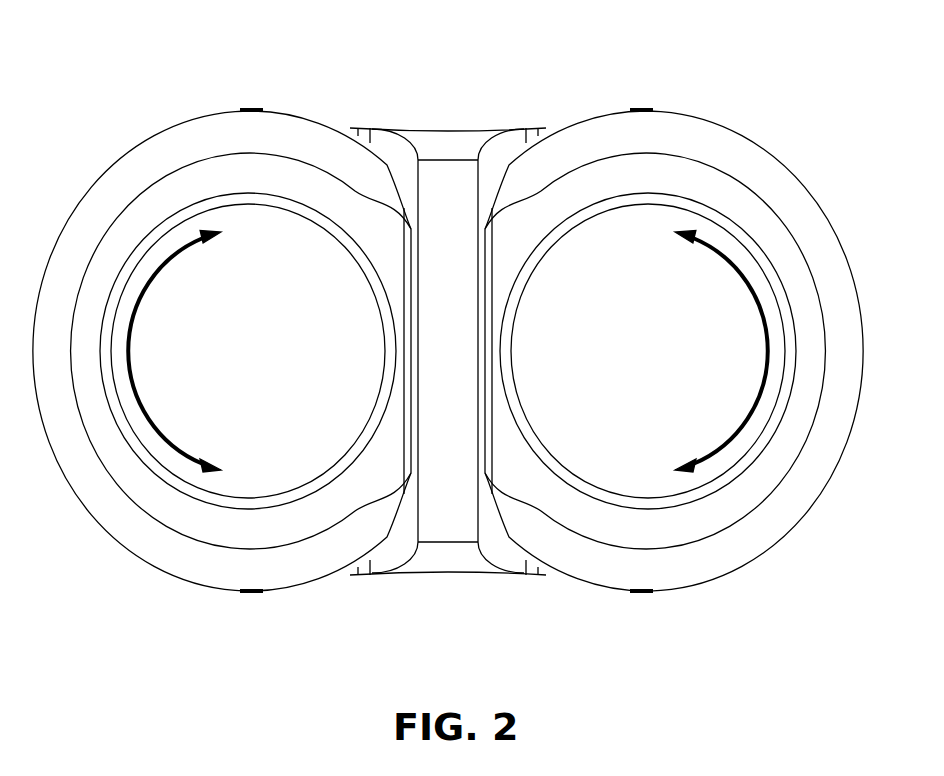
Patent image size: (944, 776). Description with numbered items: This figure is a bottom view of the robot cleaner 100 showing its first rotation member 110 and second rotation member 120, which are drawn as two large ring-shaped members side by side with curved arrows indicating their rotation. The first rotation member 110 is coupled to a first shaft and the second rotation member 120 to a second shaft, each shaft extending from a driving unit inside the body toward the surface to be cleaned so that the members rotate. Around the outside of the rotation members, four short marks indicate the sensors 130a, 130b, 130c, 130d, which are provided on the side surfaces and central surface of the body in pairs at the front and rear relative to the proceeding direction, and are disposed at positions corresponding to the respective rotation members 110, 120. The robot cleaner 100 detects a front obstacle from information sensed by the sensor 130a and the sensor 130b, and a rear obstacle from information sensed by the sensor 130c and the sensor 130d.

The robot cleaner 100 is at (448, 353).
The first rotation member 110 is at (207, 504).
The second rotation member 120 is at (689, 504).
The sensor 130a is at (251, 108).
The sensor 130b is at (641, 108).
The sensor 130c is at (251, 594).
The sensor 130d is at (641, 594).